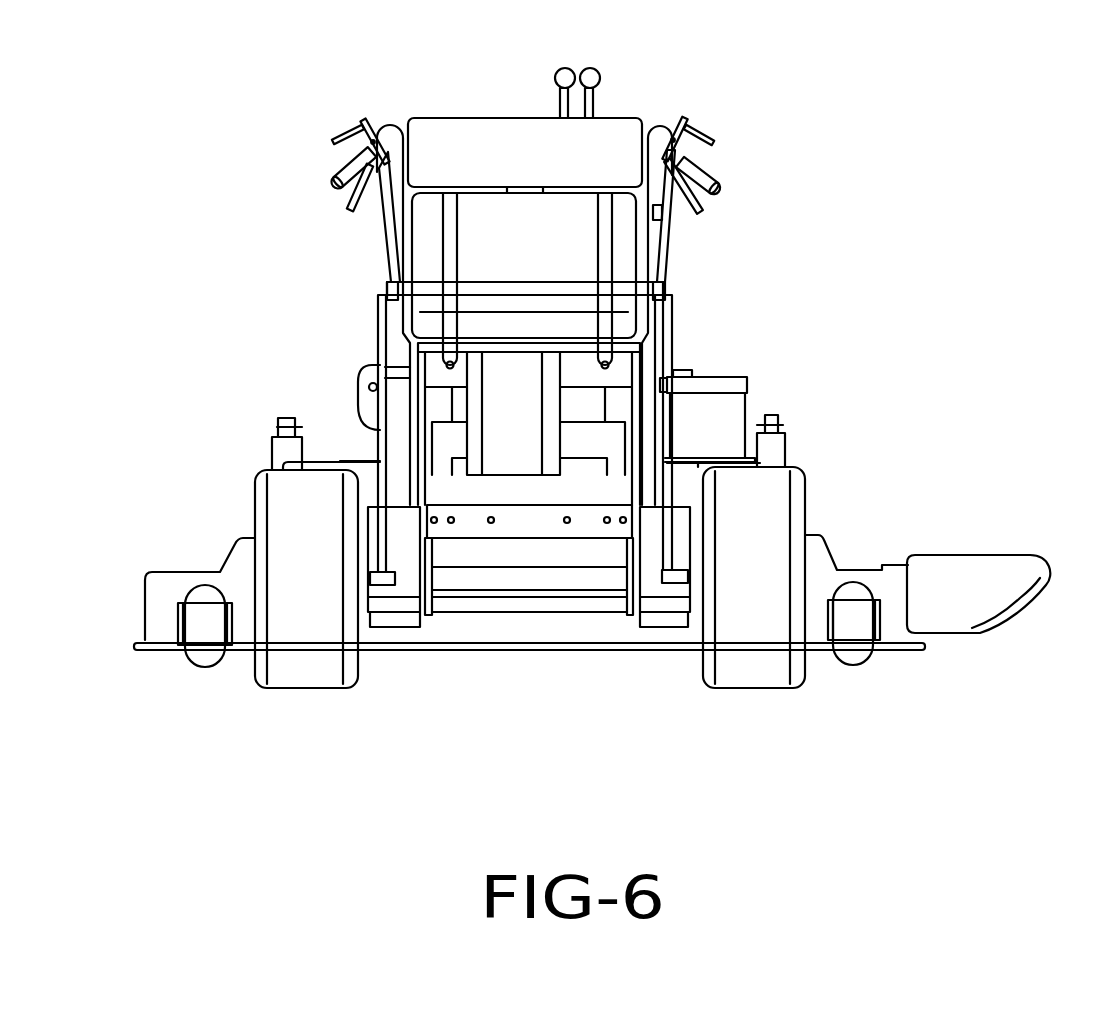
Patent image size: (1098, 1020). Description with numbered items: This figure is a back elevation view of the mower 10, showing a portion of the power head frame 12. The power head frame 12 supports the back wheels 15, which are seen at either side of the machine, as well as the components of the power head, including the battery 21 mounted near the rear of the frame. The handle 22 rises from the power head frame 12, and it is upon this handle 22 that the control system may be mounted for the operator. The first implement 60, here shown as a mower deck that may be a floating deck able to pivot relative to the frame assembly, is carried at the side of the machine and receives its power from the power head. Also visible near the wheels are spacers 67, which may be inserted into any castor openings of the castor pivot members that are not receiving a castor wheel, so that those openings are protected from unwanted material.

The mower 10 is at (918, 242).
The power head frame 12 is at (518, 525).
The back wheels 15 is at (770, 670).
The battery 21 is at (712, 398).
The handle 22 is at (710, 147).
The first implement 60 is at (985, 577).
The spacer 67 is at (282, 422).